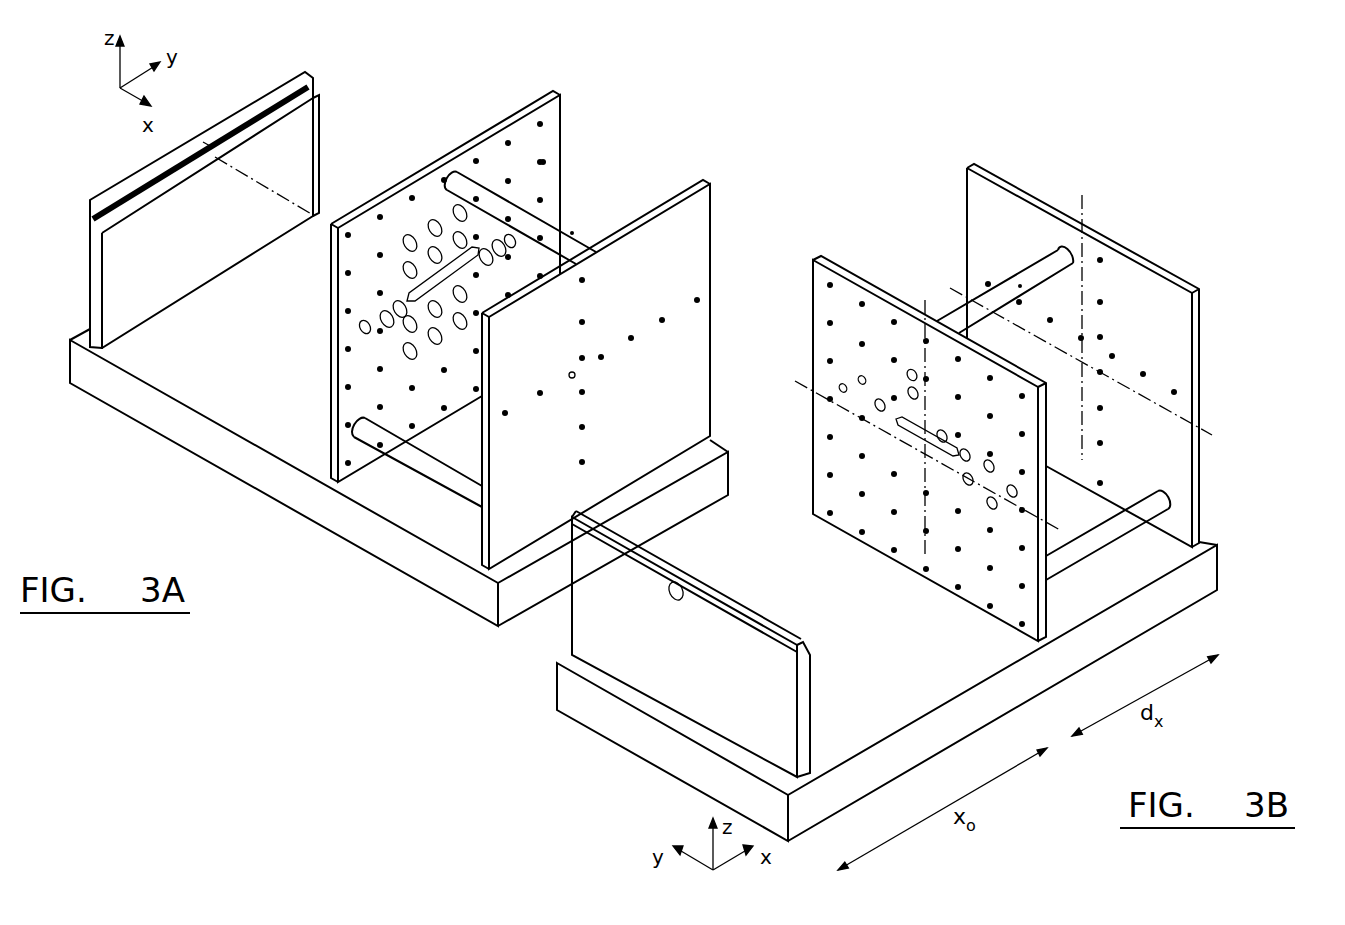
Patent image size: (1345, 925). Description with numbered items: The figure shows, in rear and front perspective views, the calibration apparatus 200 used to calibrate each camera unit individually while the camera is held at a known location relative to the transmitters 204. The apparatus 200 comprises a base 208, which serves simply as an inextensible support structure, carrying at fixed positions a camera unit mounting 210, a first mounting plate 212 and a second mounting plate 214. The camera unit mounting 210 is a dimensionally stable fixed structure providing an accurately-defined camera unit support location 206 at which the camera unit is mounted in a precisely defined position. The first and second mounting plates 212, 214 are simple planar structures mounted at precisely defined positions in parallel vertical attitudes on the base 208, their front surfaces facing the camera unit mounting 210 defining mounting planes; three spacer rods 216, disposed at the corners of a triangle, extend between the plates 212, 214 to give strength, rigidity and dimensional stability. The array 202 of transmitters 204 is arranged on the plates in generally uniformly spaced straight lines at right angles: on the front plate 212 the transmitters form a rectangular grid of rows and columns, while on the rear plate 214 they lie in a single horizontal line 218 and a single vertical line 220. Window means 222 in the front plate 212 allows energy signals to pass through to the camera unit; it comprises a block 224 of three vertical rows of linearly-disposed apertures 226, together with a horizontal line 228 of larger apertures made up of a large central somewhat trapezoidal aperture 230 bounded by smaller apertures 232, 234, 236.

In FIG. 3A, the calibration apparatus 200 is at (835, 187).
In FIG. 3B, the array of transmitters 202 is at (1057, 308).
In FIG. 3A, the transmitters 204 is at (545, 162).
In FIG. 3B, the transmitters 204 is at (862, 344).
In FIG. 3B, the camera unit support location 206 is at (660, 597).
In FIG. 3A, the base 208 is at (145, 405).
In FIG. 3B, the base 208 is at (955, 717).
In FIG. 3B, the camera unit mounting 210 is at (670, 601).
In FIG. 3A, the first mounting plate 212 is at (411, 180).
In FIG. 3B, the first mounting plate 212 is at (880, 296).
In FIG. 3A, the second mounting plate 214 is at (531, 290).
In FIG. 3B, the second mounting plate 214 is at (1150, 262).
In FIG. 3A, the spacer rods 216 is at (572, 232).
In FIG. 3B, the spacer rods 216 is at (1020, 285).
In FIG. 3A, the horizontal line of transmitters 218 is at (420, 466).
In FIG. 3B, the vertical line of transmitters 220 is at (1097, 250).
In FIG. 3A, the window means 222 is at (337, 346).
In FIG. 3B, the block of apertures 224 is at (1080, 362).
In FIG. 3B, the apertures 226 is at (907, 374).
In FIG. 3A, the horizontal line of larger apertures 228 is at (352, 430).
In FIG. 3B, the horizontal line of larger apertures 228 is at (1053, 413).
In FIG. 3A, the central trapezoidal aperture 230 is at (420, 262).
In FIG. 3B, the central trapezoidal aperture 230 is at (922, 456).
In FIG. 3A, the smaller aperture 232 is at (400, 300).
In FIG. 3B, the smaller aperture 232 is at (962, 468).
In FIG. 3A, the smaller aperture 234 is at (358, 327).
In FIG. 3B, the smaller aperture 234 is at (986, 482).
In FIG. 3A, the smaller aperture 236 is at (372, 336).
In FIG. 3B, the smaller aperture 236 is at (1010, 500).